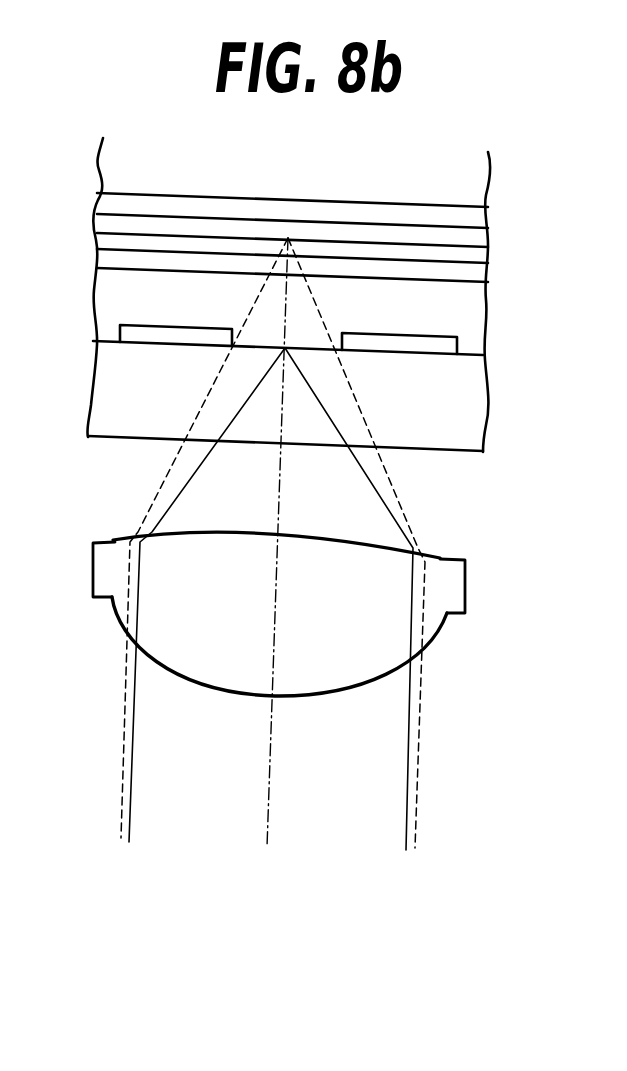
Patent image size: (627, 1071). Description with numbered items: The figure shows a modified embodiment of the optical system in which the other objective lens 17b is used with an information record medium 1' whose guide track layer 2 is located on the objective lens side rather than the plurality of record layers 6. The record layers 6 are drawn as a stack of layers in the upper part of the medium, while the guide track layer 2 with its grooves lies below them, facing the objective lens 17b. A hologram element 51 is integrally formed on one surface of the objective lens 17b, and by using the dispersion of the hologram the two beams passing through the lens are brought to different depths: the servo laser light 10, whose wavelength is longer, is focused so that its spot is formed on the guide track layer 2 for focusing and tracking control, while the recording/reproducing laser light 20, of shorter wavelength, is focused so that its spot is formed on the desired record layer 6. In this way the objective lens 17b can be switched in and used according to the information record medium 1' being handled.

The information record medium 1' is at (330, 295).
The record layers 6 is at (137, 232).
The guide track layer 2 is at (452, 333).
The objective lens 17b is at (323, 649).
The hologram element 51 is at (243, 695).
The recording/reproducing laser light 20 is at (423, 697).
The servo laser light 10 is at (410, 763).